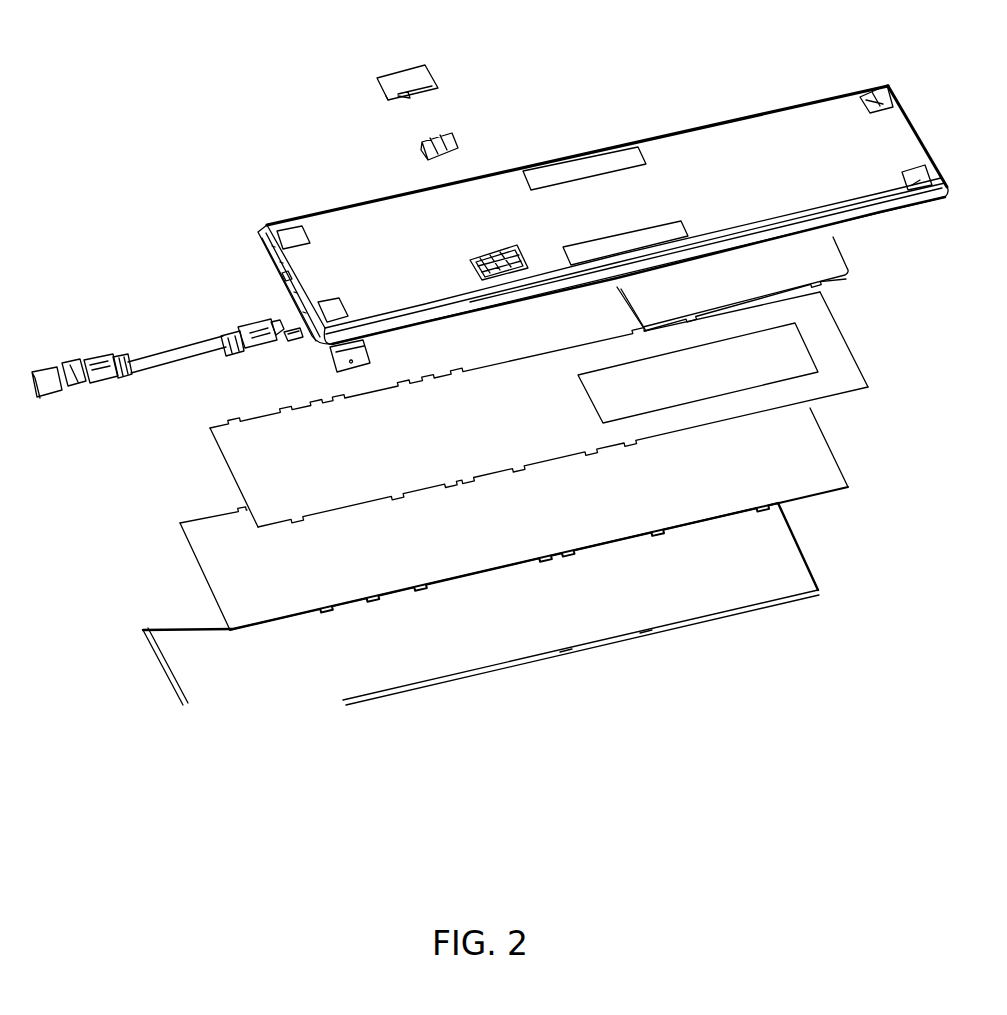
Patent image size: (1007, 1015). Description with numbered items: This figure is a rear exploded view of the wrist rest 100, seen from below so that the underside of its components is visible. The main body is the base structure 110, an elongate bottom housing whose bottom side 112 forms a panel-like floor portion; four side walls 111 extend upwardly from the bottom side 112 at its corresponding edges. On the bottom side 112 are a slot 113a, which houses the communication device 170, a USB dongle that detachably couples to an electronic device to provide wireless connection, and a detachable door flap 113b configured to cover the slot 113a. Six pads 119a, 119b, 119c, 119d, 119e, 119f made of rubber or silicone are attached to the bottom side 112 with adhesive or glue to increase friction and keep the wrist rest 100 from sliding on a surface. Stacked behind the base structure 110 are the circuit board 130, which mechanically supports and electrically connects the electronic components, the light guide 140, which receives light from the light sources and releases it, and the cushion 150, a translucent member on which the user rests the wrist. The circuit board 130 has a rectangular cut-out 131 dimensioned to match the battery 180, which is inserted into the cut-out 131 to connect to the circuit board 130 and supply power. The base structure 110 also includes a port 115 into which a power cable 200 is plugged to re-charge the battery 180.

The wrist rest 100 is at (759, 56).
The base structure 110 is at (826, 97).
The side wall 111 is at (258, 238).
The bottom side 112 is at (294, 260).
The slot 113a is at (523, 259).
The detachable door flap 113b is at (428, 78).
The port 115 is at (298, 344).
The pad 119a is at (292, 235).
The pad 119b is at (537, 172).
The pad 119c is at (866, 101).
The pad 119d is at (330, 306).
The pad 119e is at (609, 242).
The pad 119f is at (906, 182).
The circuit board 130 is at (858, 362).
The cut-out 131 is at (698, 373).
The light guide 140 is at (847, 467).
The cushion 150 is at (819, 582).
The communication device 170 is at (455, 138).
The battery 180 is at (840, 252).
The power cable 200 is at (171, 334).